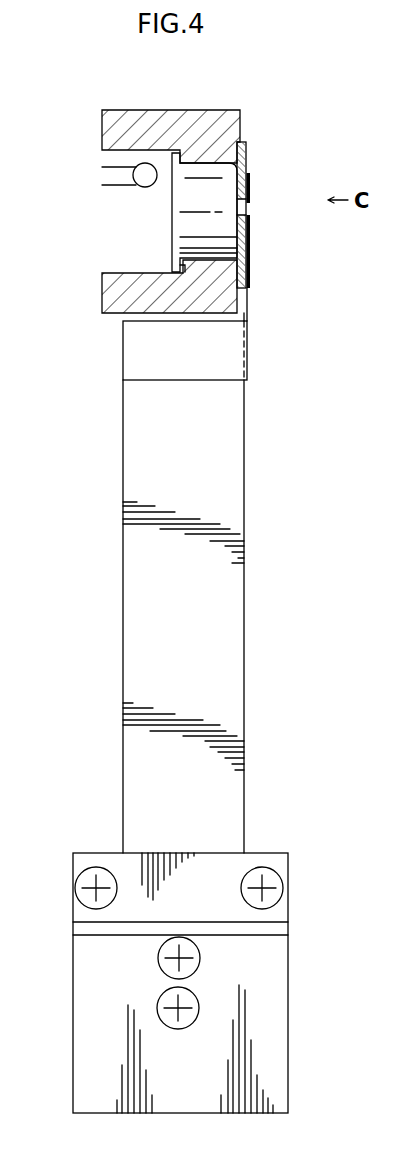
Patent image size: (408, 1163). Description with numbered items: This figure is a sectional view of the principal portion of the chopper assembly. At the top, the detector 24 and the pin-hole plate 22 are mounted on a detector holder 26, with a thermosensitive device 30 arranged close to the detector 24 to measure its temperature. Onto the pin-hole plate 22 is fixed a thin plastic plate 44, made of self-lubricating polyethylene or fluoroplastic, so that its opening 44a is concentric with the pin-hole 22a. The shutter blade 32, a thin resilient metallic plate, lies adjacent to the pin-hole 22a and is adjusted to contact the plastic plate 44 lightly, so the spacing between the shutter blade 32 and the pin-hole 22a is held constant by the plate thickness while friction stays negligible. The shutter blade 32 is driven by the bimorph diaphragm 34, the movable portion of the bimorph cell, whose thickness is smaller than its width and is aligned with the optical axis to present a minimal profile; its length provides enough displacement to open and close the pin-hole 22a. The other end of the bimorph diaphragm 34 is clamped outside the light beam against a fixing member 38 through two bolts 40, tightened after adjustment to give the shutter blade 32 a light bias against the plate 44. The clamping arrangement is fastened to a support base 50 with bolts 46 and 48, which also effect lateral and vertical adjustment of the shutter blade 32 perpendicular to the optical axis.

The pin-hole plate 22 is at (238, 152).
The pin-hole 22a is at (251, 226).
The detector 24 is at (203, 176).
The detector holder 26 is at (172, 120).
The thermosensitive device 30 is at (146, 184).
The shutter blade 32 is at (250, 345).
The bimorph diaphragm 34 is at (245, 540).
The fixing member 38 is at (268, 853).
The bolts 40 is at (76, 885).
The thin plastic plate 44 is at (248, 153).
The opening 44a is at (250, 210).
The bolt 46 is at (201, 952).
The bolt 48 is at (200, 1005).
The support base 50 is at (272, 1078).